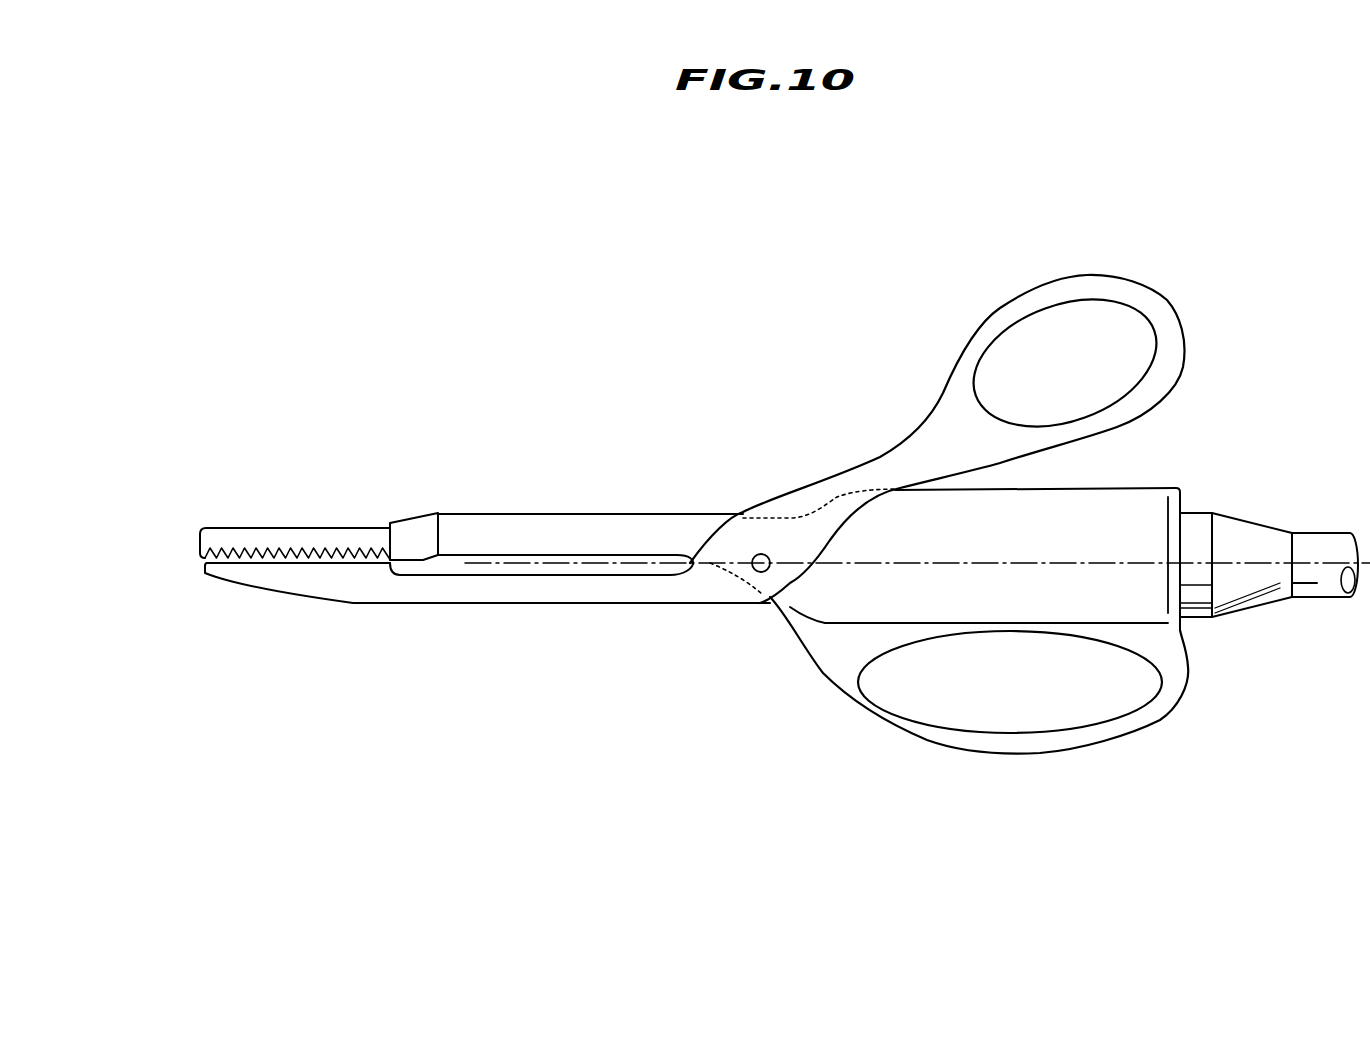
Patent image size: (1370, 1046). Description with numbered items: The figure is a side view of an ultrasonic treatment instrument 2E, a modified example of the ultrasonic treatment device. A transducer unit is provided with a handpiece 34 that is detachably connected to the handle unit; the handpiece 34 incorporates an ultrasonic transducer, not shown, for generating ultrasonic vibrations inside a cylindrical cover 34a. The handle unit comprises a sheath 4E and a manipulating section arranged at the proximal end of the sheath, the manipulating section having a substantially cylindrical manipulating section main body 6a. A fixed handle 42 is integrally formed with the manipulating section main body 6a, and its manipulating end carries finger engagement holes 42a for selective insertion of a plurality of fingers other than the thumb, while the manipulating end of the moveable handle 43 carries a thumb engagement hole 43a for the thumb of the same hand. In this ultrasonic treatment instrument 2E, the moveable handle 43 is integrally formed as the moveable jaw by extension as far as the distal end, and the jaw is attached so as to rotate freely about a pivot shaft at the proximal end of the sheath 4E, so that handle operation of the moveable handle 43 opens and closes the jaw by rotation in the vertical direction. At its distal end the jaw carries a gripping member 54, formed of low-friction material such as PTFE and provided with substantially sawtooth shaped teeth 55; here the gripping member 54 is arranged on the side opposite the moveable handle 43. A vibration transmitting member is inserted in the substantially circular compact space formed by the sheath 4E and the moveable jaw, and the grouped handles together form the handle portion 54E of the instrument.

The ultrasonic treatment instrument 2E is at (677, 344).
The sheath 4E is at (532, 528).
The manipulating section main body 6a is at (800, 622).
The handpiece 34 is at (1218, 646).
The cylindrical cover 34a is at (1248, 595).
The fixed handle 42 is at (838, 659).
The finger engagement holes 42a is at (1013, 710).
The moveable handle 43 is at (893, 475).
The thumb engagement hole 43a is at (1077, 327).
The gripping member 54 is at (280, 578).
The handle portion / operating portion 54E is at (784, 477).
The sawtooth shaped teeth 55 is at (205, 558).